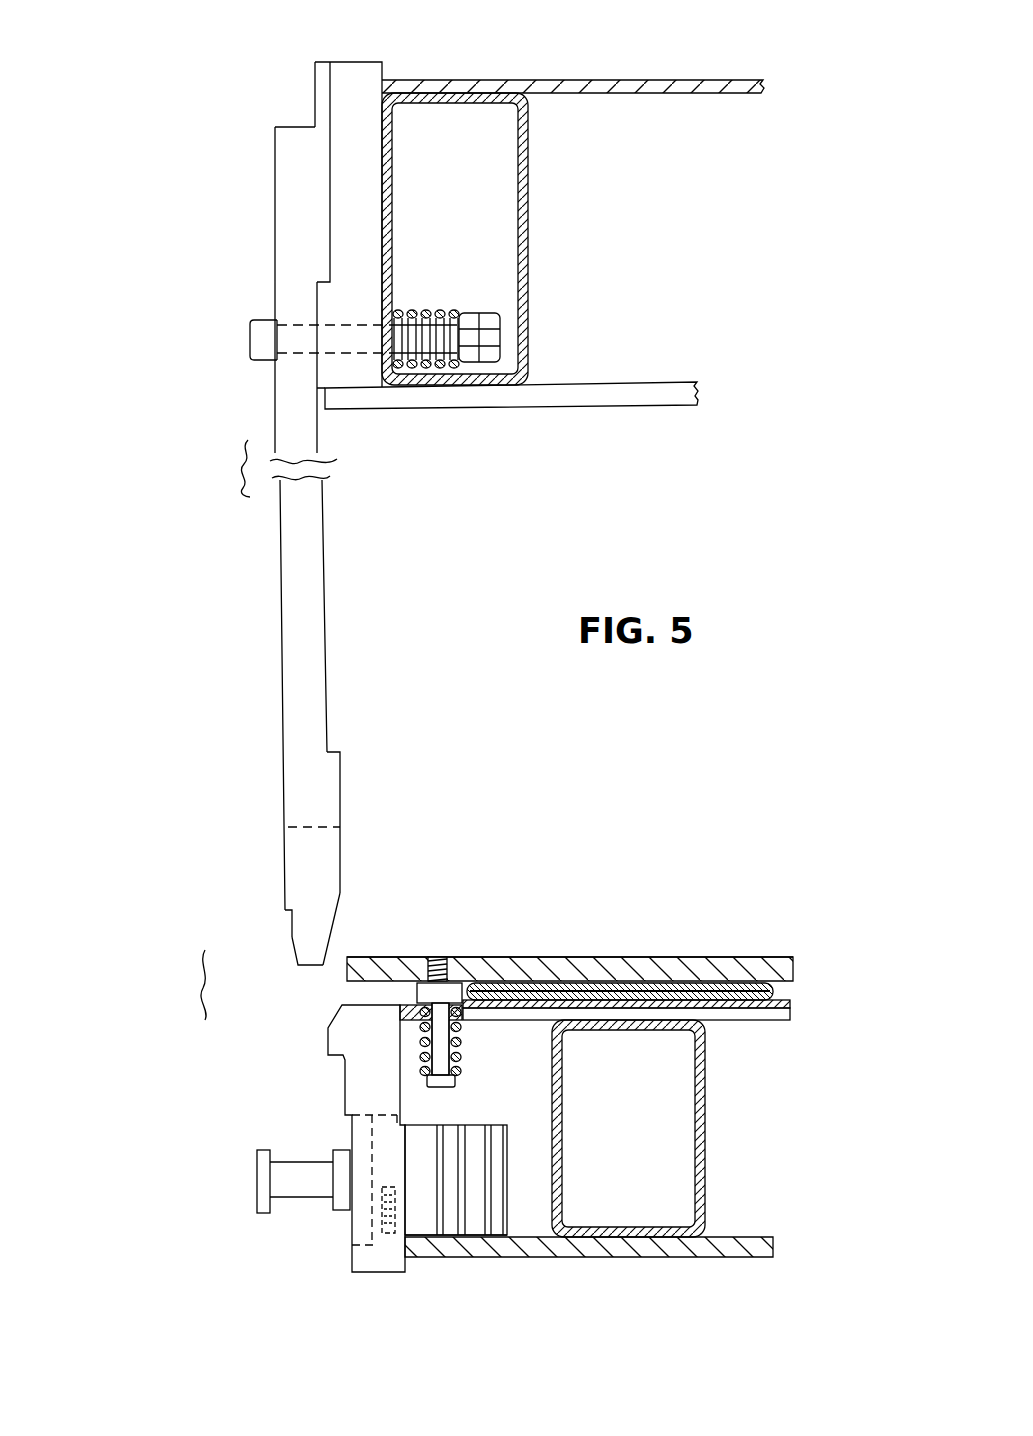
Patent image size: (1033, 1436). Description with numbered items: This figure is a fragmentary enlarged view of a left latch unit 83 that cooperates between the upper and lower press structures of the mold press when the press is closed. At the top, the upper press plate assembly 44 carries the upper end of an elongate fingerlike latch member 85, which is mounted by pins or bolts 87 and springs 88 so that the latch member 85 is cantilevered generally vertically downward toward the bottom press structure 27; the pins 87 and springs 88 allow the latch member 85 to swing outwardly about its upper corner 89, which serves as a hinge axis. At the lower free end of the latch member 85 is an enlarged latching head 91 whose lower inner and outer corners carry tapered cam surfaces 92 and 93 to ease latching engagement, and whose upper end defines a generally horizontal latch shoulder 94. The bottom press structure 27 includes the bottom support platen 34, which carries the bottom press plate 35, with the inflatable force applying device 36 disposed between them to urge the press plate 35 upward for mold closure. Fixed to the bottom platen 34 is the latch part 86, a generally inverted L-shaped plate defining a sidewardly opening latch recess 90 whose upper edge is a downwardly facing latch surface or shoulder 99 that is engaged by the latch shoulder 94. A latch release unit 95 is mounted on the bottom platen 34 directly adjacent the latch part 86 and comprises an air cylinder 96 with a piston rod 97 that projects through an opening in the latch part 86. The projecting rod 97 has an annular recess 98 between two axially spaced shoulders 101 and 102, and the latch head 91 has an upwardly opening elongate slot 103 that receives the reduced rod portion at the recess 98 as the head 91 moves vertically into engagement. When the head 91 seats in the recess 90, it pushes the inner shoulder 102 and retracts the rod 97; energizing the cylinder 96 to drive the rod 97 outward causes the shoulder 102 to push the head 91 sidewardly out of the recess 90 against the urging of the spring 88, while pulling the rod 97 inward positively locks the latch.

The bottom press structure 27 is at (668, 957).
The bottom support platen 34 is at (690, 1258).
The bottom press plate 35 is at (582, 958).
The force applying device 36 is at (525, 990).
The upper press plate assembly 44 is at (578, 81).
The left latch unit 83 is at (192, 467).
The latch member 85 is at (287, 383).
The latch part 86 is at (347, 1072).
The pins or bolts 87 is at (360, 350).
The springs 88 is at (418, 310).
The upper corner 89 is at (328, 62).
The latch recess 90 is at (347, 1100).
The latching head 91 is at (330, 800).
The tapered cam surface 92 is at (292, 935).
The tapered cam surface 93 is at (340, 912).
The latch shoulder 94 is at (336, 752).
The latch release unit 95 is at (519, 1225).
The air cylinder 96 is at (478, 1135).
The piston rod 97 is at (293, 1188).
The annular recess 98 is at (277, 1210).
The latch surface or shoulder 99 is at (340, 1063).
The shoulder 101 is at (253, 1183).
The inner shoulder 102 is at (340, 1213).
The elongate slot 103 is at (300, 827).